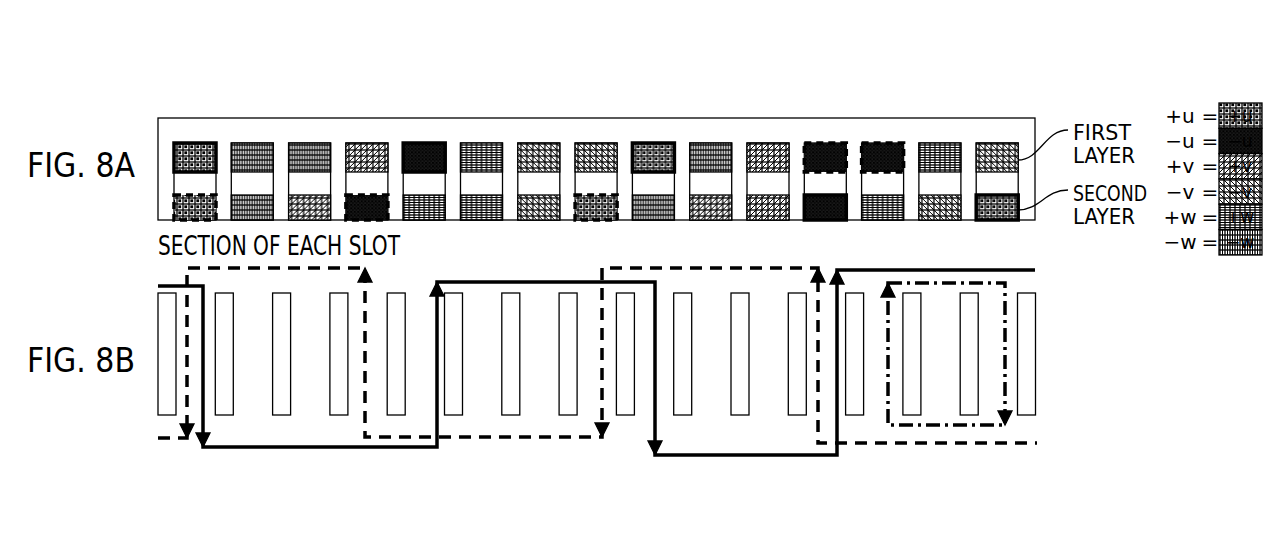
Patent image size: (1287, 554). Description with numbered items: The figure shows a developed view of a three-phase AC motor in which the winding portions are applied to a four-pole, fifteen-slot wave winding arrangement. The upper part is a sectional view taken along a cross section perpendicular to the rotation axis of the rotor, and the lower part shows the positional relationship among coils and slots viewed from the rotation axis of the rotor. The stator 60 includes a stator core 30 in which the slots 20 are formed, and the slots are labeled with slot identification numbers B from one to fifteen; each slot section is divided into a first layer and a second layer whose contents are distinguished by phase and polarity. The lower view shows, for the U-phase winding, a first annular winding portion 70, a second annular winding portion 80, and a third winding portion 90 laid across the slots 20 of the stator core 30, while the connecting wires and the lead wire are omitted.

In FIG. 8B, the slots 20 is at (597, 396).
In FIG. 8A, the stator core 30 is at (596, 127).
In FIG. 8B, the stator core 30 is at (737, 405).
In FIG. 8A, the stator 60 is at (596, 115).
In FIG. 8A, the slot identification numbers B is at (607, 122).
In FIG. 8B, the first annular winding portion 70 is at (283, 448).
In FIG. 8B, the second annular winding portion 80 is at (482, 438).
In FIG. 8B, the third winding portion 90 is at (940, 426).